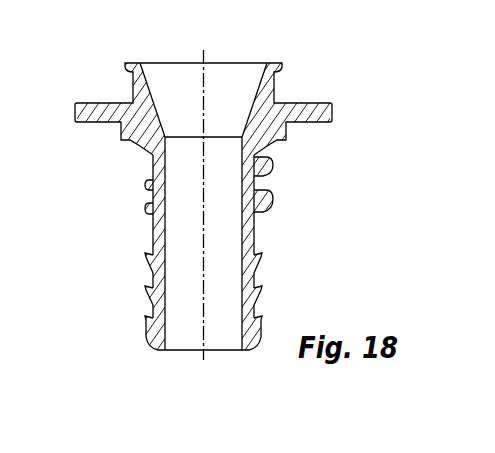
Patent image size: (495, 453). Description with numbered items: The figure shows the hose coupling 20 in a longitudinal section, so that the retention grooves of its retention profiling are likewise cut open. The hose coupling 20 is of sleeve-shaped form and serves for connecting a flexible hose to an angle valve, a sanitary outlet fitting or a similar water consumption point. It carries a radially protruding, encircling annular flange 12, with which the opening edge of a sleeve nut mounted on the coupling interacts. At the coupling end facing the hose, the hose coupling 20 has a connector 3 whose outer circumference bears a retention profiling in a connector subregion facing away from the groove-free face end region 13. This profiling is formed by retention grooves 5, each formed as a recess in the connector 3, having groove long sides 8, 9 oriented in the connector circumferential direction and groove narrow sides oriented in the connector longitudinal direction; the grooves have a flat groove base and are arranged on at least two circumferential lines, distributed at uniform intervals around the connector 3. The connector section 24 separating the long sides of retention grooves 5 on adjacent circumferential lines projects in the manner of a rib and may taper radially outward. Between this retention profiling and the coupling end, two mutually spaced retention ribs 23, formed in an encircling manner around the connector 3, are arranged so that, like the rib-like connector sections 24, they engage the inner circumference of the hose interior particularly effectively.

The hose coupling 20 is at (247, 200).
The annular flange 12 is at (332, 108).
The connector 3 is at (247, 200).
The retention rib 23 is at (264, 259).
The groove-free face end region 13 is at (148, 338).
The retention groove 5 is at (247, 200).
The groove long side 8 is at (146, 188).
The groove long side 9 is at (146, 211).
The connector section 24 is at (270, 222).